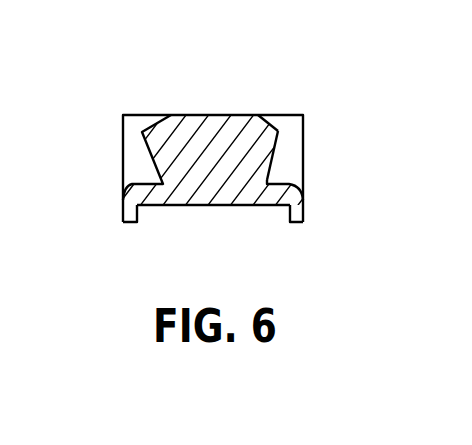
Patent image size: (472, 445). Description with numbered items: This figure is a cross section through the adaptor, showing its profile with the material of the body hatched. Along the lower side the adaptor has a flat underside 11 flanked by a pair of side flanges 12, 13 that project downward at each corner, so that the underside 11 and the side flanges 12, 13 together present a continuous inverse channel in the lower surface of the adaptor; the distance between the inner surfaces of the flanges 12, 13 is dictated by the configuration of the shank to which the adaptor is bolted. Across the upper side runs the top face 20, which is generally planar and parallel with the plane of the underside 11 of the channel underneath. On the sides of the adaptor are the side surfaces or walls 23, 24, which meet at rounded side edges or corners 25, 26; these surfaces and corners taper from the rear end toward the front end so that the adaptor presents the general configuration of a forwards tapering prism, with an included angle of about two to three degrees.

The top face 20 is at (208, 113).
The flat underside 11 is at (223, 206).
The side flange 12 is at (138, 210).
The side flange 13 is at (287, 212).
The side surface 23 is at (272, 129).
The side surface 24 is at (271, 158).
The rounded side edge 25 is at (142, 131).
The rounded side edge 26 is at (278, 133).